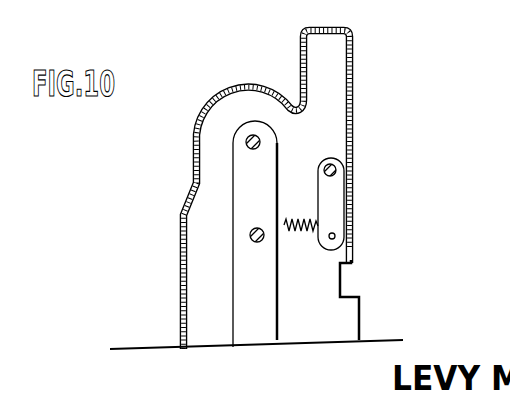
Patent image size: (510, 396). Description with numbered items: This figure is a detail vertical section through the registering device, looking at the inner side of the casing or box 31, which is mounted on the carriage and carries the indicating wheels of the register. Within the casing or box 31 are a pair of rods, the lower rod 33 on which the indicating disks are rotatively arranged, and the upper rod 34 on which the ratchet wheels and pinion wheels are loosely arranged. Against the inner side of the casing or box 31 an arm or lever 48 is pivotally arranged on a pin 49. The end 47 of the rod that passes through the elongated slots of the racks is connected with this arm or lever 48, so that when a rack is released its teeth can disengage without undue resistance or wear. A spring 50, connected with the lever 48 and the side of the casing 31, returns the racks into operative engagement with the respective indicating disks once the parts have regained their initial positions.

The casing or box 31 is at (192, 131).
The lower rod 33 is at (250, 236).
The upper rod 34 is at (267, 141).
The rod end 47 is at (331, 240).
The arm or lever 48 is at (322, 184).
The pin 49 is at (329, 166).
The spring 50 is at (297, 231).